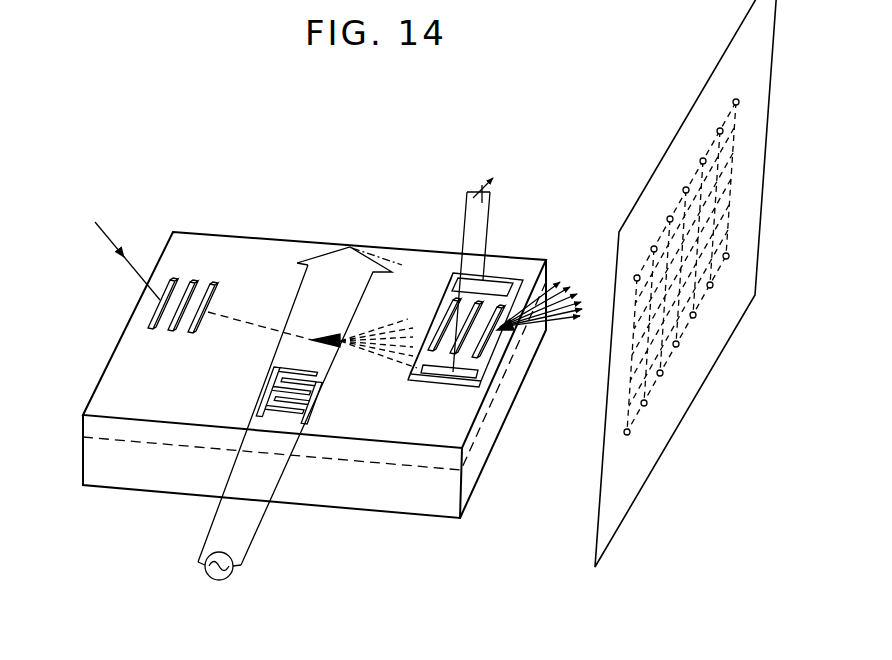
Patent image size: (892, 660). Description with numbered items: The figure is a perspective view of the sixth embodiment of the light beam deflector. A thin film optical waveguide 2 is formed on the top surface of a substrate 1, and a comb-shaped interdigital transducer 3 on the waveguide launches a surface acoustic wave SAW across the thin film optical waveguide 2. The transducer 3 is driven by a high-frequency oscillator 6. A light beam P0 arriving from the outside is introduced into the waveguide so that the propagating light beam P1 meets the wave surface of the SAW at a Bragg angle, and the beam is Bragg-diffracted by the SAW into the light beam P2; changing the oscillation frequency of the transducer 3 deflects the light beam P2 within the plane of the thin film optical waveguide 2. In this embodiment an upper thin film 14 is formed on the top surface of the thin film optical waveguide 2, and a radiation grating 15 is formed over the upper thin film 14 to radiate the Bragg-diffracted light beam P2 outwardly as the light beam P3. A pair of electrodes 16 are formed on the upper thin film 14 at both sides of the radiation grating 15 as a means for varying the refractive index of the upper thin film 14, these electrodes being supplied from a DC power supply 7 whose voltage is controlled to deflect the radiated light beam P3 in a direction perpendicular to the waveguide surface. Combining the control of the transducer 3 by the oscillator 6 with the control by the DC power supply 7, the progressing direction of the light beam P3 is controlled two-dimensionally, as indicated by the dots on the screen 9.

The substrate 1 is at (163, 472).
The thin film optical waveguide 2 is at (83, 428).
The comb-shaped electrode (interdigital transducer, IDT) 3 is at (262, 390).
The high-frequency oscillator 6 is at (232, 578).
The DC power supply 7 is at (480, 177).
The screen 9 is at (630, 500).
The upper thin film 14 is at (494, 356).
The radiation grating 15 is at (444, 308).
The electrodes 16 is at (503, 284).
The light beam from the outside P0 is at (113, 247).
The light beam propagating in the waveguide P1 is at (241, 319).
The Bragg-diffracted light beam P2 is at (379, 353).
The radiated light beam P3 is at (558, 317).
The surface acoustic wave SAW is at (311, 262).